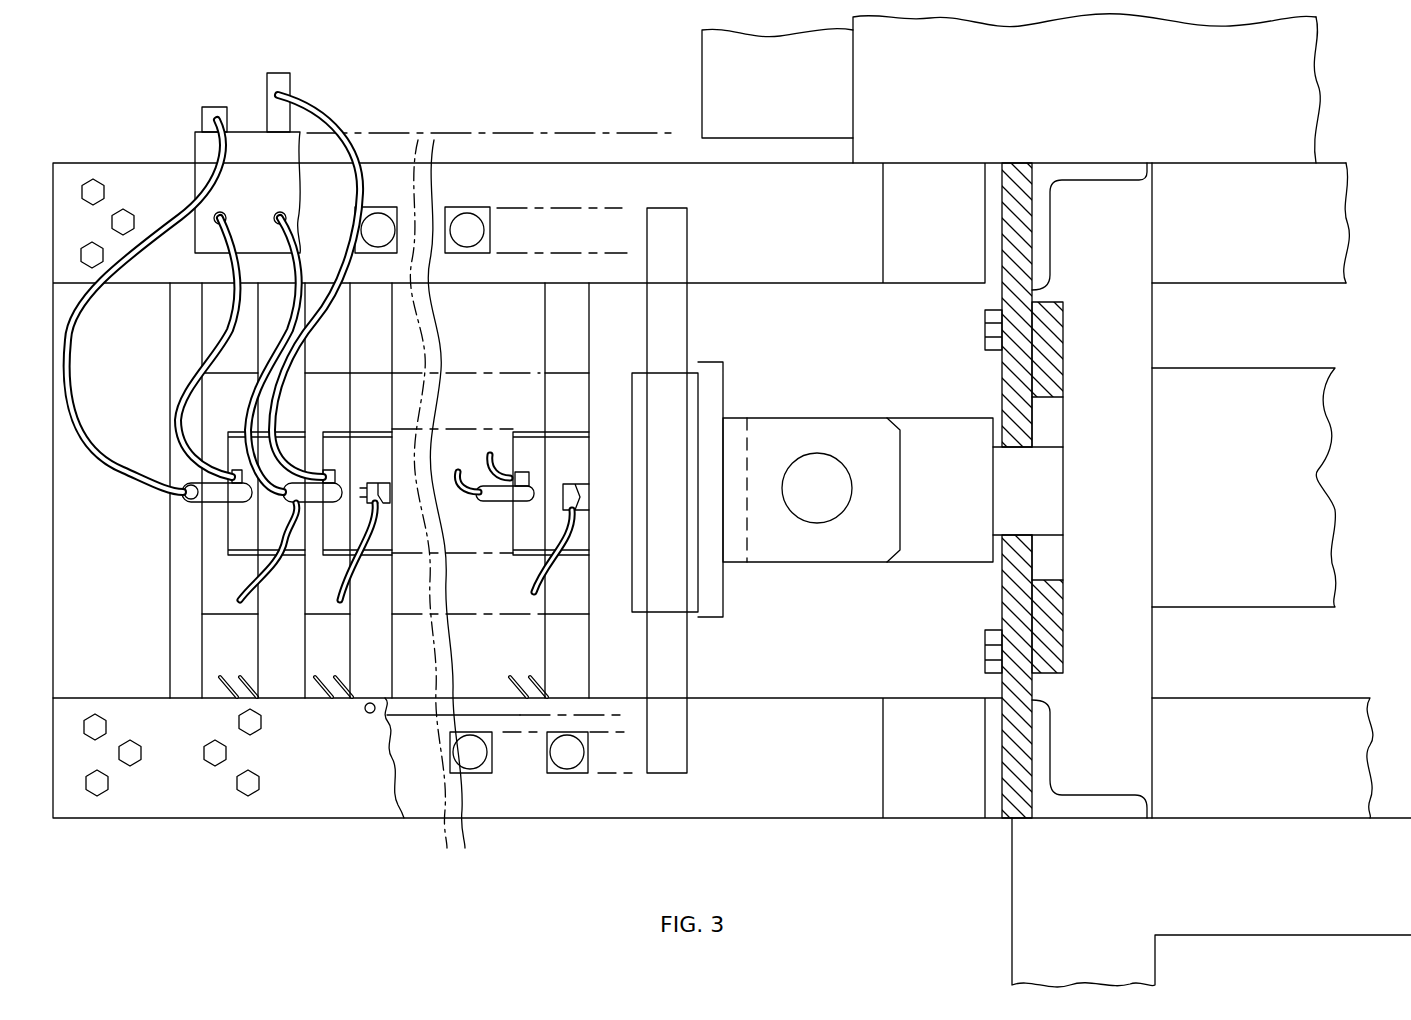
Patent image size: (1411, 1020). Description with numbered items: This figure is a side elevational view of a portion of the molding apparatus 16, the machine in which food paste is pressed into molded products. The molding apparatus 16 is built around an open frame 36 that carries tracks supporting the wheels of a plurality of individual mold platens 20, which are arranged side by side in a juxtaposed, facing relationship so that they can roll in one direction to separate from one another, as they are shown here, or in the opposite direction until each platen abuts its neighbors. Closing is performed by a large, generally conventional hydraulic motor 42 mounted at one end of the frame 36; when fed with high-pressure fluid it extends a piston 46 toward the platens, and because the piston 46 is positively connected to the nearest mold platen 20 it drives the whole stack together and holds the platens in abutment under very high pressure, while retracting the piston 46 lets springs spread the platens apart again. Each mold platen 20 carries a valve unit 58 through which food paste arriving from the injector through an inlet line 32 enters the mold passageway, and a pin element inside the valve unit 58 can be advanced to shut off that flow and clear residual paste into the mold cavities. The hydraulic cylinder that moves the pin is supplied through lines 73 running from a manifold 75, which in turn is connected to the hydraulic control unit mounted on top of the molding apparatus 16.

The molding apparatus 16 is at (356, 824).
The mold platens 20 is at (302, 360).
The inlet lines 32 is at (290, 572).
The open frame 36 is at (828, 272).
The hydraulic motor 42 is at (1276, 370).
The piston 46 is at (952, 418).
The valve unit 58 is at (239, 560).
The lines 73 is at (234, 104).
The manifold 75 is at (195, 150).